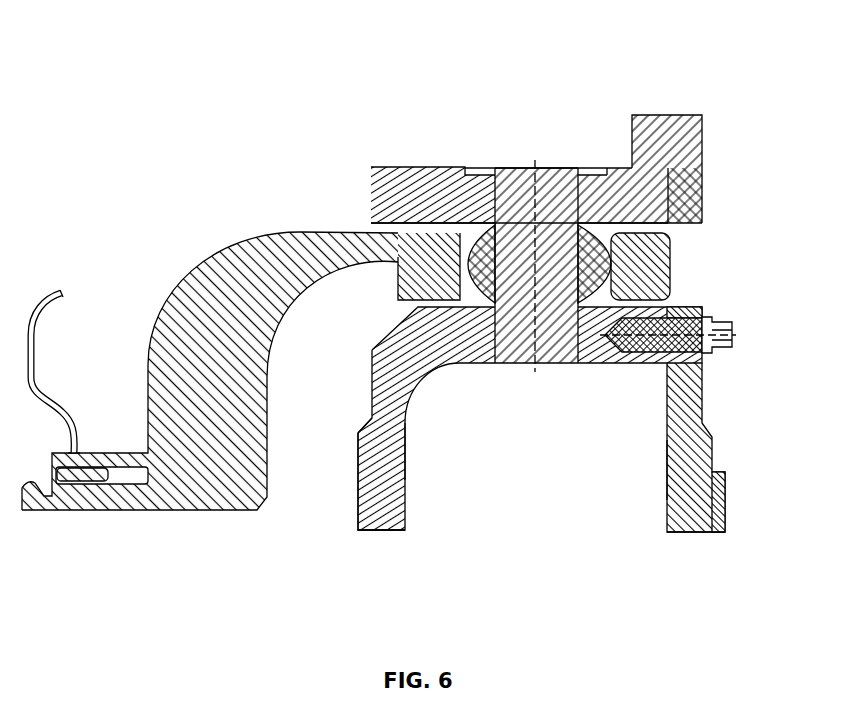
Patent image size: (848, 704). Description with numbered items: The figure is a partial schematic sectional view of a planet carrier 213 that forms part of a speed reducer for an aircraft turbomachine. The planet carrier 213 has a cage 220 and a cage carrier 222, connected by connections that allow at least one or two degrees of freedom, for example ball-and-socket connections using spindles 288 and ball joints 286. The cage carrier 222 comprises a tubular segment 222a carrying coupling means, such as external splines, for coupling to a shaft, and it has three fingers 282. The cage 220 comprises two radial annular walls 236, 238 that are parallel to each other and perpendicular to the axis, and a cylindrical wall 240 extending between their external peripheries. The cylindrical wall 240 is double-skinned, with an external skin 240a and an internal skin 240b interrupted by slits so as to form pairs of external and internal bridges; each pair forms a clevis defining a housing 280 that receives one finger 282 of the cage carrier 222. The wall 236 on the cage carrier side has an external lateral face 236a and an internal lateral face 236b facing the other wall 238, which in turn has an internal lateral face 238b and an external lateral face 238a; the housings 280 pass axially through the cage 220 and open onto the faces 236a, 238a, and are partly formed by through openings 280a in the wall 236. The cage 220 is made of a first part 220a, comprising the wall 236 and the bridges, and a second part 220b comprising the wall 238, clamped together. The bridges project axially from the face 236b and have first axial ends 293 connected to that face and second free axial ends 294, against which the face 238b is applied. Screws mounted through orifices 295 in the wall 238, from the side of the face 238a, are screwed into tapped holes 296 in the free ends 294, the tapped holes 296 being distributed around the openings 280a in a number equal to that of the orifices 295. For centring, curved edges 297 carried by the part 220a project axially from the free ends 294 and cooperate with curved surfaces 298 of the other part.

The planet carrier 213 is at (546, 212).
The cage 220 is at (547, 341).
The first part of the cage 220a is at (366, 510).
The second part of the cage 220b is at (698, 542).
The cage carrier 222 is at (210, 365).
The tubular segment 222a is at (118, 500).
The radial annular wall 236 is at (395, 492).
The external lateral face of wall 236 236a is at (358, 455).
The internal lateral face of wall 236 236b is at (406, 425).
The radial annular wall 238 is at (680, 484).
The external lateral face of wall 238 238a is at (716, 456).
The internal lateral face of wall 238 238b is at (668, 476).
The cylindrical wall 240 is at (471, 174).
The external skin 240a is at (618, 195).
The internal skin 240b is at (467, 350).
The housing 280 is at (546, 245).
The through openings 280a is at (380, 335).
The finger 282 is at (330, 248).
The ball joint 286 is at (586, 290).
The spindle 288 is at (546, 253).
The first axial ends of the bridges 293 is at (493, 332).
The second free axial ends of the bridges 294 is at (699, 226).
The orifices 295 is at (702, 368).
The tapped holes 296 is at (645, 310).
The curved edges 297 is at (655, 135).
The curved surfaces 298 is at (692, 215).